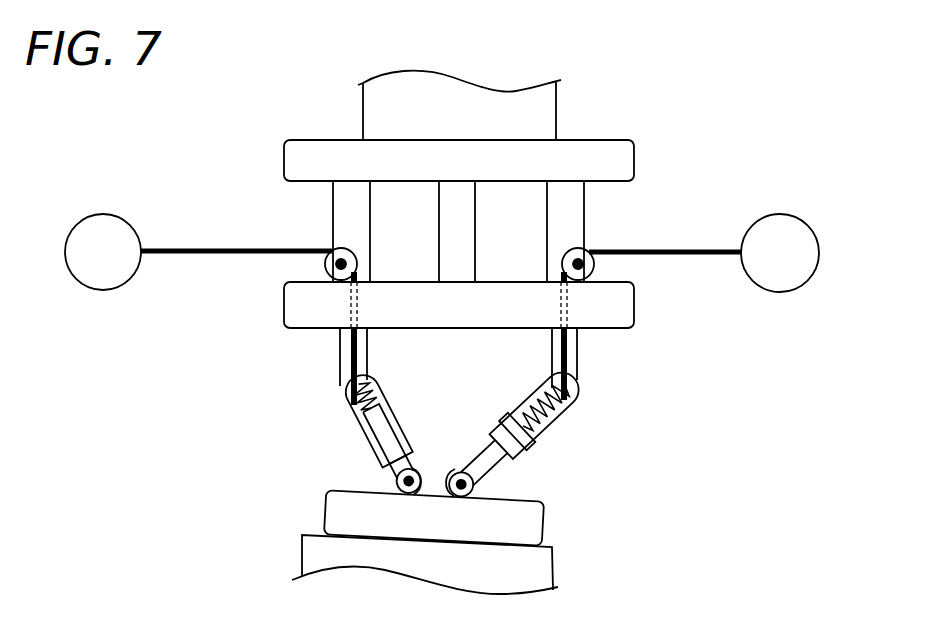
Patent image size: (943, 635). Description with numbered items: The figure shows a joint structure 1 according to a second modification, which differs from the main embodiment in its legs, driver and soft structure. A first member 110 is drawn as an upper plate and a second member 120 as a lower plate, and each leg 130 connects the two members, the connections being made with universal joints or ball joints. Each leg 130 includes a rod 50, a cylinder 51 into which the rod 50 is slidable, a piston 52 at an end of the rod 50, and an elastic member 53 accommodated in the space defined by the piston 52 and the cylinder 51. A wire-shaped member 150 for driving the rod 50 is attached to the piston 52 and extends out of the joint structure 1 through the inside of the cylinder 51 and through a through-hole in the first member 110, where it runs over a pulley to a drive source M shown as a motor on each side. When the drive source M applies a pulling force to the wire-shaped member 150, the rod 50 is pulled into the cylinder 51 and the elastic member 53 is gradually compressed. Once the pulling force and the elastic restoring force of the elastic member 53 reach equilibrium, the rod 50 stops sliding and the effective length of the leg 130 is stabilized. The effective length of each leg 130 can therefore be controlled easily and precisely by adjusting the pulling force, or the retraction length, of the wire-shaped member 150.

The joint structure 1 is at (241, 203).
The first member 110 is at (623, 303).
The second member 120 is at (533, 532).
The leg 130 is at (343, 403).
The wire-shaped member 150 is at (572, 360).
The rod 50 is at (490, 467).
The cylinder 51 is at (538, 412).
The piston 52 is at (517, 431).
The elastic member 53 is at (544, 406).